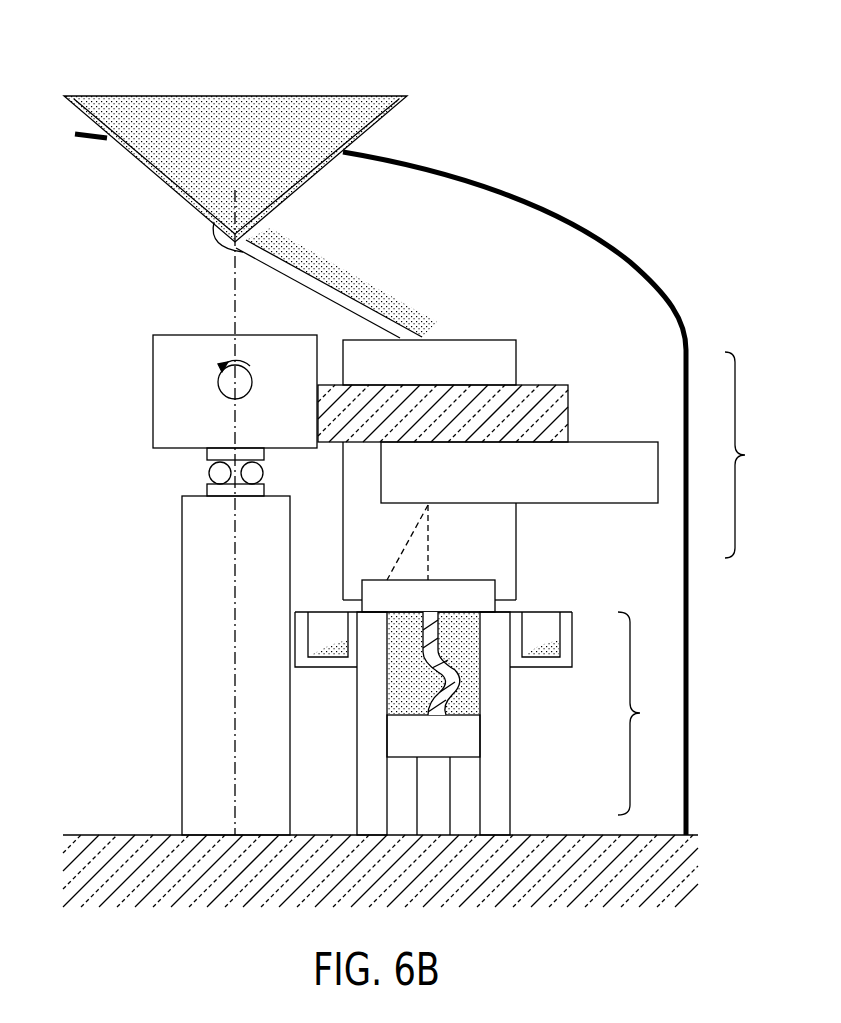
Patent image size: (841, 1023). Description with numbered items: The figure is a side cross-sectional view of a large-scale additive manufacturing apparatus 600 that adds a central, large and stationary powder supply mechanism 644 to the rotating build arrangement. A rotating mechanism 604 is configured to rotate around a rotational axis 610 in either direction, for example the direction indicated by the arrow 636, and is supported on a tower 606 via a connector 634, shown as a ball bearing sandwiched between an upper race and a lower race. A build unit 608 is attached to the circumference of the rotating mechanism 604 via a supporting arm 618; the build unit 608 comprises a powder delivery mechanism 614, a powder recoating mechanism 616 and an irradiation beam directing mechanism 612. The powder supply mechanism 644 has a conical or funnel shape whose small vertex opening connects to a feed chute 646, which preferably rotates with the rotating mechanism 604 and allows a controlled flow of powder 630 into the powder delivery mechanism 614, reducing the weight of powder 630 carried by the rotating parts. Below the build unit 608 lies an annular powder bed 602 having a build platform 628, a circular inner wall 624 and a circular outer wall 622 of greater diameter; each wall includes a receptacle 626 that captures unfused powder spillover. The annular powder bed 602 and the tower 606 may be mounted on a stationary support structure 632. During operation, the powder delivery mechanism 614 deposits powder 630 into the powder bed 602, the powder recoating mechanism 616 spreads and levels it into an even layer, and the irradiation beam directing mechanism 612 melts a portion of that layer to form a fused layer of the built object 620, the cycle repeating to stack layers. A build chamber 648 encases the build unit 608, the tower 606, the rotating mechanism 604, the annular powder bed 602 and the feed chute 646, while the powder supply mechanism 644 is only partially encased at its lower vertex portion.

The large-scale additive manufacturing apparatus 600 is at (640, 82).
The annular powder bed 602 is at (488, 685).
The rotating mechanism 604 is at (153, 404).
The tower 606 is at (182, 604).
The build unit 608 is at (755, 455).
The rotational axis 610 is at (228, 306).
The irradiation beam directing mechanism 612 is at (640, 493).
The powder delivery mechanism 614 is at (506, 358).
The powder recoating mechanism 616 is at (490, 612).
The supporting arm 618 is at (556, 418).
The built object 620 is at (435, 625).
The outer wall 622 is at (498, 796).
The inner wall 624 is at (370, 811).
The receptacle 626 is at (332, 632).
The build platform 628 is at (462, 742).
The powder 630 is at (300, 105).
The stationary support structure 632 is at (690, 882).
The connector 634 is at (208, 478).
The arrow 636 is at (270, 220).
The powder supply mechanism 644 is at (407, 100).
The feed chute 646 is at (272, 270).
The build chamber 648 is at (690, 614).